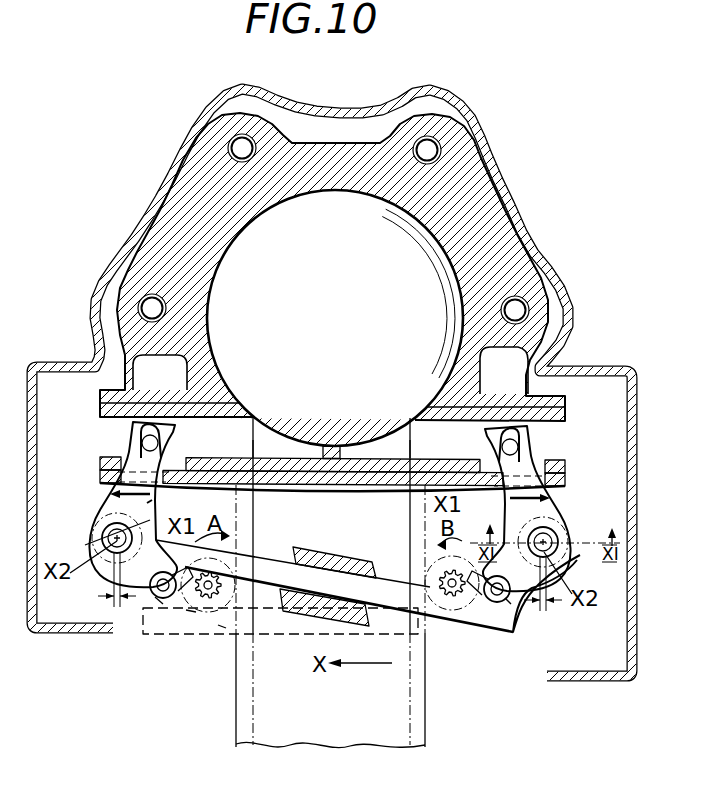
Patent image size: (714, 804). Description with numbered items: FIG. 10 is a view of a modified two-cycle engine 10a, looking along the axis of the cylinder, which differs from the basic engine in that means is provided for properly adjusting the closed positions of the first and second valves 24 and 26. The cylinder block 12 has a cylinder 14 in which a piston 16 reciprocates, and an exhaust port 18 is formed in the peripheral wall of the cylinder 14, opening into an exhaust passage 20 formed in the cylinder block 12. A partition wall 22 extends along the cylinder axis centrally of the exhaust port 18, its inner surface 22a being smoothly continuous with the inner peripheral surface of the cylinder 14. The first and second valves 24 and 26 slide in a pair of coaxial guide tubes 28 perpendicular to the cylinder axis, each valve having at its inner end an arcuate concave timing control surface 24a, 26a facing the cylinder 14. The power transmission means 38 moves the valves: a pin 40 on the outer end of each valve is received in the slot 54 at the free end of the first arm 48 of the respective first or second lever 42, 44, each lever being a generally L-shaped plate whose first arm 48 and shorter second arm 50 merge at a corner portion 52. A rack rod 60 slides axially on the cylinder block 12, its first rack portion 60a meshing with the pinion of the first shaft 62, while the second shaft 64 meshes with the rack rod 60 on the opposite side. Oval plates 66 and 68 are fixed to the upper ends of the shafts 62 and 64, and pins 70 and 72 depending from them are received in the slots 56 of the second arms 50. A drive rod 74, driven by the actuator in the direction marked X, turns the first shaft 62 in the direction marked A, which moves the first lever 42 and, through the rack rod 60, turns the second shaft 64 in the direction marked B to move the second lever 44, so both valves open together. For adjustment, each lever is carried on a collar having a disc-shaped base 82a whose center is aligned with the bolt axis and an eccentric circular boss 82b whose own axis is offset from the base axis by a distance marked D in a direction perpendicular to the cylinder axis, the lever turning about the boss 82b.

The modified two-cycle engine 10a is at (526, 189).
The cylinder block 12 is at (197, 224).
The cylinder 14 is at (250, 208).
The piston 16 is at (348, 192).
The exhaust port 18 is at (357, 442).
The exhaust passage 20 is at (407, 683).
The partition wall 22 is at (330, 447).
The inner surface of the partition wall 22a is at (330, 440).
The first valve 24 is at (243, 440).
The timing control surface of the first valve 24a is at (277, 443).
The second valve 26 is at (402, 440).
The timing control surface of the second valve 26a is at (377, 440).
The guide tube 28 is at (100, 405).
The power transmission means 38 is at (433, 677).
The pin 40 is at (135, 440).
The first lever 42 is at (120, 500).
The second lever 44 is at (550, 504).
The first arm 48 is at (147, 503).
The second arm 50 is at (143, 597).
The corner portion 52 is at (103, 520).
The slot 54 is at (158, 440).
The slot 56 is at (177, 607).
The rack rod 60 is at (287, 560).
The first rack portion 60a is at (192, 612).
The first shaft 62 is at (210, 598).
The second shaft 64 is at (427, 567).
The first oval plate 66 is at (222, 627).
The second oval plate 68 is at (452, 607).
The pin 70 is at (163, 605).
The pin 72 is at (516, 592).
The drive rod 74 is at (280, 637).
The disc-shaped base 82a is at (658, 497).
The eccentric circular boss 82b is at (600, 573).